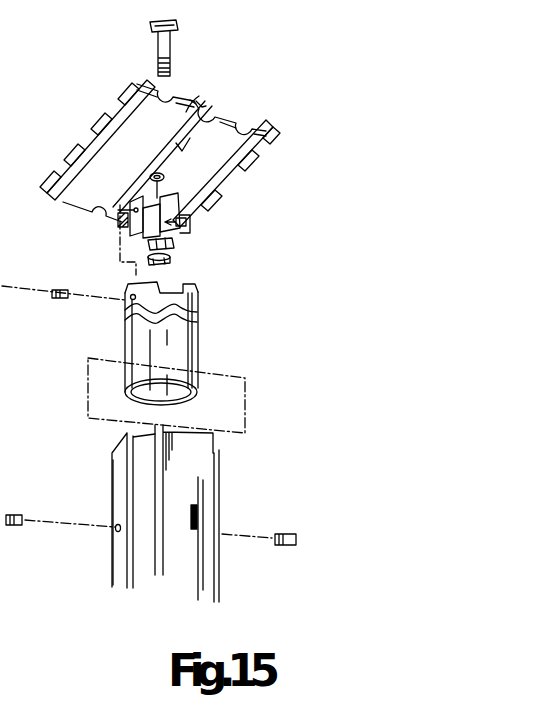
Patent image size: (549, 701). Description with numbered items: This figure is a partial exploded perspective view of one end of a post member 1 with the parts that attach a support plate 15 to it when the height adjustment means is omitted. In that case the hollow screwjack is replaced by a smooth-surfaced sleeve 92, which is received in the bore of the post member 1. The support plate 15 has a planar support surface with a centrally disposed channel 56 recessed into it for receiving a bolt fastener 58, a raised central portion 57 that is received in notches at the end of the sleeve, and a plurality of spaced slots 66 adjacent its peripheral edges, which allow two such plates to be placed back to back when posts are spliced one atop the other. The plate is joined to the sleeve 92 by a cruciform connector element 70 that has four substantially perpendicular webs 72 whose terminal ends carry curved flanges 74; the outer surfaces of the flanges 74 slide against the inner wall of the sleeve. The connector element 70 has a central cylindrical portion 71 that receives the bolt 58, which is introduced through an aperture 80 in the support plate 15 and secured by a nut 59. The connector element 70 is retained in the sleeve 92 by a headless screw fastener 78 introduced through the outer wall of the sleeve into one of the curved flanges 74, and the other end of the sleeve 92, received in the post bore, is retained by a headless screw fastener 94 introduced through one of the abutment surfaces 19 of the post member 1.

The post member 1 is at (198, 473).
The support plate 15 is at (259, 122).
The abutment surface 19 is at (120, 563).
The centrally disposed channel 56 is at (214, 105).
The raised central portion 57 is at (192, 98).
The bolt fastener 58 is at (170, 43).
The nut 59 is at (167, 262).
The slots 66 is at (60, 183).
The cruciform connector element 70 is at (163, 233).
The central cylindrical portion 71 is at (167, 243).
The webs 72 is at (122, 243).
The curved flanges 74 is at (178, 223).
The headless screw fastener 78 is at (58, 296).
The aperture 80 is at (153, 165).
The sleeve 92 is at (197, 347).
The headless screw fastener 94 is at (20, 511).